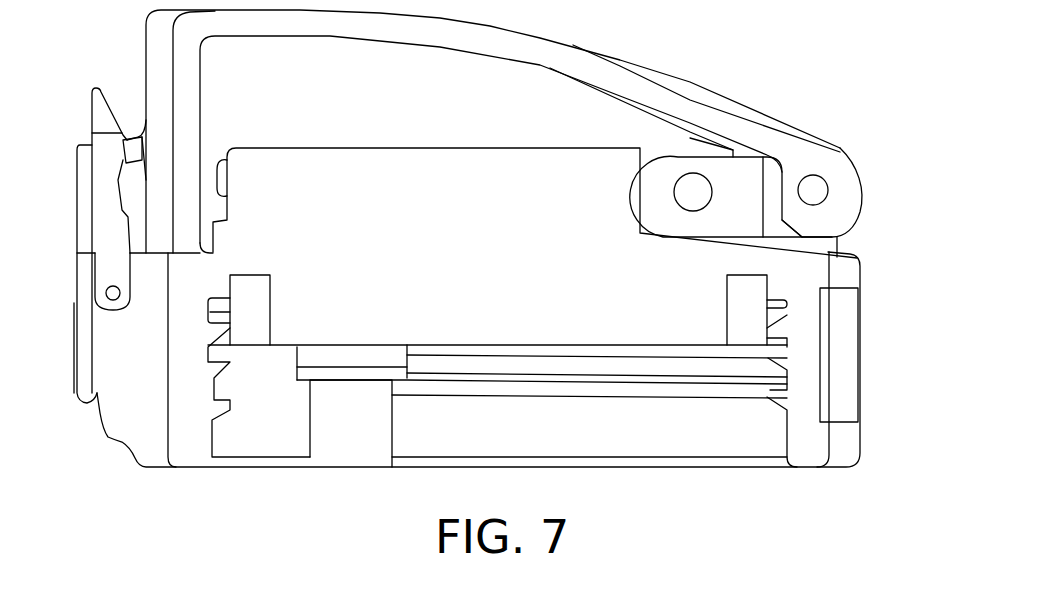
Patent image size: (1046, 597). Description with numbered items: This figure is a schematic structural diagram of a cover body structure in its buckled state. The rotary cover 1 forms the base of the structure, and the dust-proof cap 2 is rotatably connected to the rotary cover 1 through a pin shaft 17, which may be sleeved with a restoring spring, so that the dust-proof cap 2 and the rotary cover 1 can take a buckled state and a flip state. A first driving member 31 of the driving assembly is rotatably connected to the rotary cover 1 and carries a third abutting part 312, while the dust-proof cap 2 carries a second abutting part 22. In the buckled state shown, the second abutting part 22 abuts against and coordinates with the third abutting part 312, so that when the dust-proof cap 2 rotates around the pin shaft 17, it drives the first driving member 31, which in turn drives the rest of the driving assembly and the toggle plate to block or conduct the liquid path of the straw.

The rotary cover 1 is at (119, 380).
The dust-proof cap 2 is at (190, 49).
The first driving member 31 is at (677, 173).
The third abutting part 312 is at (763, 190).
The pin shaft 17 is at (813, 190).
The second abutting part 22 is at (802, 237).